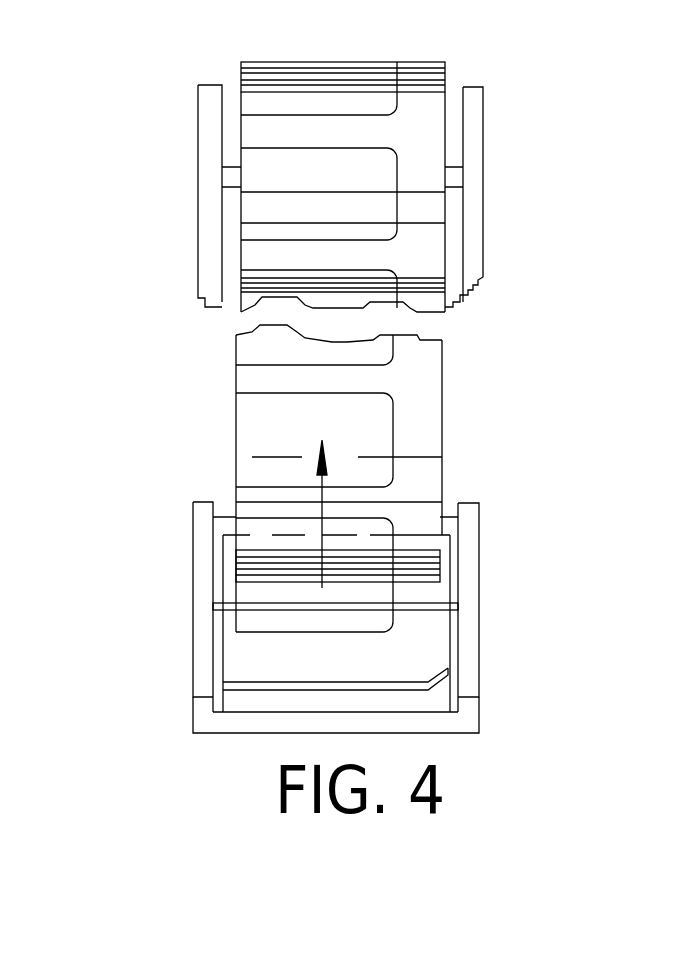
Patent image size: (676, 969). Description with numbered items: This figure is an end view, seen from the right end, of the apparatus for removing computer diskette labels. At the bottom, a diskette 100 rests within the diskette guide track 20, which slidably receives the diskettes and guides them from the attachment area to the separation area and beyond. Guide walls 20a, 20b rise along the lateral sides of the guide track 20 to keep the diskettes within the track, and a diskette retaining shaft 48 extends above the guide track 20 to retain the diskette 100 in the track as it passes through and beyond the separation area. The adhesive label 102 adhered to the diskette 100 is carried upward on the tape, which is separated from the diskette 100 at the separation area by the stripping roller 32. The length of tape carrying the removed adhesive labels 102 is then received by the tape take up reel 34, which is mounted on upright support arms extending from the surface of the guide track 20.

The tape take up reel 34 is at (453, 63).
The stripping roller 32 is at (445, 362).
The adhesive label 102 is at (243, 480).
The diskette retaining shaft 48 is at (256, 573).
The diskette guide track 20 is at (424, 409).
The guide wall 20a is at (124, 610).
The guide wall 20b is at (561, 630).
The diskette 100 is at (446, 623).